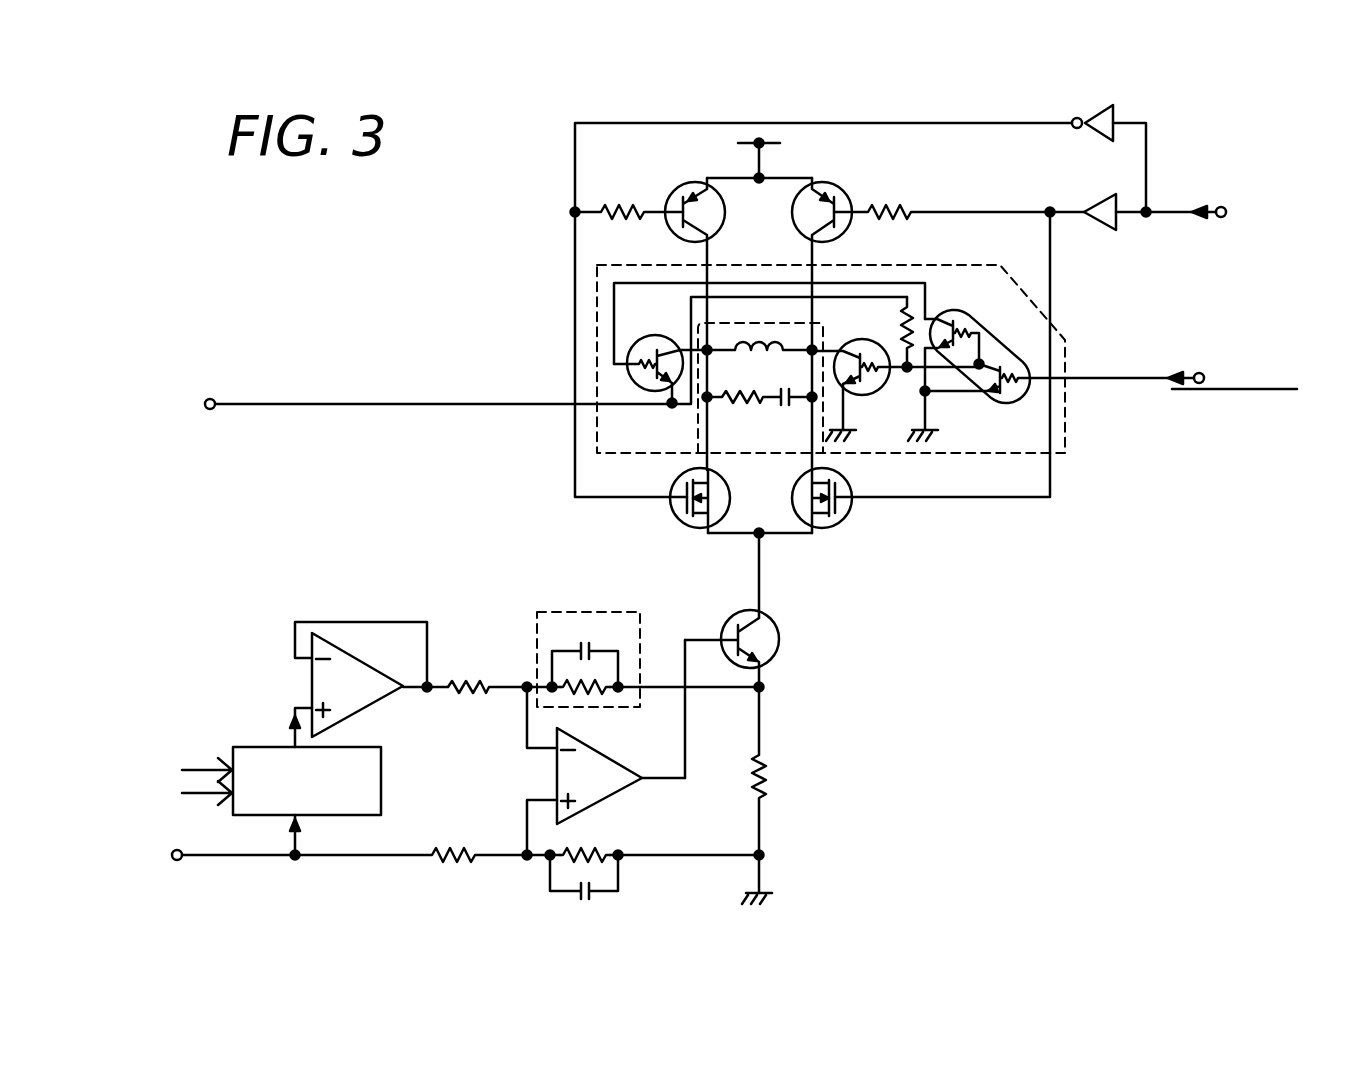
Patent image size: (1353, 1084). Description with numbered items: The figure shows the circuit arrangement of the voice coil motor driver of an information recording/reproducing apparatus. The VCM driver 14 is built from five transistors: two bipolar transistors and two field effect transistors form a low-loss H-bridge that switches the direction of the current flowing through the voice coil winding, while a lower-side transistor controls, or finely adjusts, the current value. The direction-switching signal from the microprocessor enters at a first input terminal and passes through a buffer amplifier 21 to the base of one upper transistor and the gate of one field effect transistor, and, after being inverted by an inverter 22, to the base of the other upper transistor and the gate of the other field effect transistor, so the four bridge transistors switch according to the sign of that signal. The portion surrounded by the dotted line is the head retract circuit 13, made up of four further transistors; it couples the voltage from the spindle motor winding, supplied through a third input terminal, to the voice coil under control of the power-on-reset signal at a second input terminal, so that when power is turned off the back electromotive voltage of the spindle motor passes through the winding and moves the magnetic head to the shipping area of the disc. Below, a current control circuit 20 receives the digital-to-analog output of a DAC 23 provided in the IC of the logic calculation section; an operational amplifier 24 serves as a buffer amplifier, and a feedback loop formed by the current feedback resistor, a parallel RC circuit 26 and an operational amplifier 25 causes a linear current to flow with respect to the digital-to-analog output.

The head retract circuit 13 is at (1068, 410).
The VCM driver 14 is at (504, 233).
The current control circuit 20 is at (496, 603).
The buffer amplifier 21 is at (1111, 231).
The inverter 22 is at (1097, 141).
The DAC 23 is at (381, 800).
The operational amplifier 24 is at (383, 702).
The operational amplifier 25 is at (556, 771).
The parallel RC circuit 26 is at (588, 612).